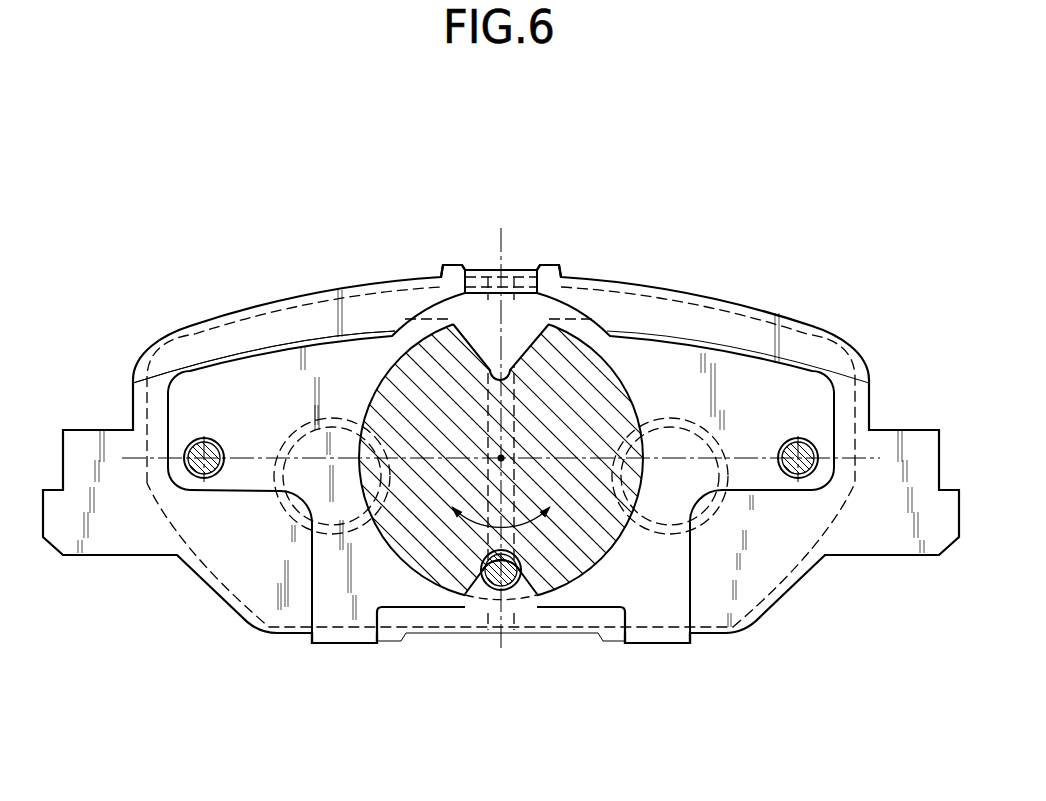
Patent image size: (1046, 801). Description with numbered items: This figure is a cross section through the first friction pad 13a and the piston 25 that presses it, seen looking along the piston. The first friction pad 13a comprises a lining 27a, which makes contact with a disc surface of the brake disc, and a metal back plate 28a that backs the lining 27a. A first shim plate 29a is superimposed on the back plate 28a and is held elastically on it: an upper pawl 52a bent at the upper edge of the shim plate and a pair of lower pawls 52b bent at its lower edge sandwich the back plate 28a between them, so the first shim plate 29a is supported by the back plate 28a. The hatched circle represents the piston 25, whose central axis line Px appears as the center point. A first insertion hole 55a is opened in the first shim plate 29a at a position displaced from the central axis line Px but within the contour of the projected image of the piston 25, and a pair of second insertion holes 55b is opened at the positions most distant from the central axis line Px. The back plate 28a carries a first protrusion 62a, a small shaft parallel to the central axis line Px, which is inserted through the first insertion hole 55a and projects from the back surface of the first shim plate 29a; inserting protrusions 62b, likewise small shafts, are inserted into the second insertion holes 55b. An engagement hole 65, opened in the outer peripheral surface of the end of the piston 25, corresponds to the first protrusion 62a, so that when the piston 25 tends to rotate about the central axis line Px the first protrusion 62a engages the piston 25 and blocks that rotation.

The first friction pad 13a is at (501, 510).
The lining 27a is at (131, 713).
The back plate 28a is at (200, 583).
The first shim plate 29a is at (266, 350).
The piston 25 is at (609, 362).
The central axis line Px is at (504, 456).
The upper pawl 52a is at (488, 266).
The lower pawls 52b is at (663, 645).
The first insertion hole 55a is at (490, 594).
The second insertion holes 55b is at (792, 441).
The first protrusion 62a is at (507, 591).
The inserting protrusions 62b is at (809, 476).
The engagement hole 65 is at (517, 585).